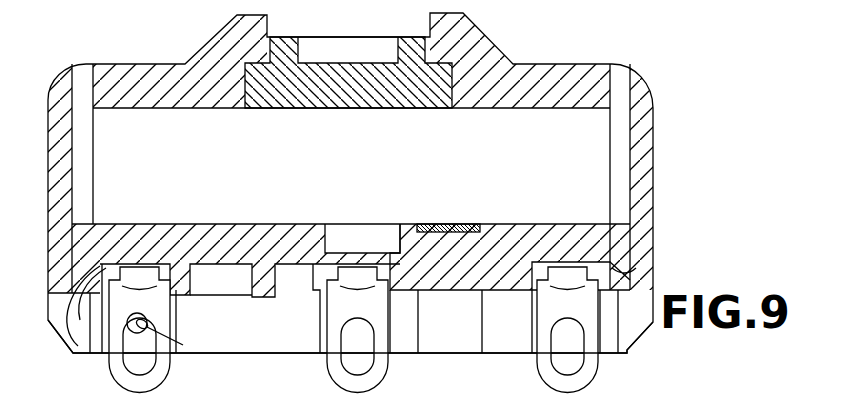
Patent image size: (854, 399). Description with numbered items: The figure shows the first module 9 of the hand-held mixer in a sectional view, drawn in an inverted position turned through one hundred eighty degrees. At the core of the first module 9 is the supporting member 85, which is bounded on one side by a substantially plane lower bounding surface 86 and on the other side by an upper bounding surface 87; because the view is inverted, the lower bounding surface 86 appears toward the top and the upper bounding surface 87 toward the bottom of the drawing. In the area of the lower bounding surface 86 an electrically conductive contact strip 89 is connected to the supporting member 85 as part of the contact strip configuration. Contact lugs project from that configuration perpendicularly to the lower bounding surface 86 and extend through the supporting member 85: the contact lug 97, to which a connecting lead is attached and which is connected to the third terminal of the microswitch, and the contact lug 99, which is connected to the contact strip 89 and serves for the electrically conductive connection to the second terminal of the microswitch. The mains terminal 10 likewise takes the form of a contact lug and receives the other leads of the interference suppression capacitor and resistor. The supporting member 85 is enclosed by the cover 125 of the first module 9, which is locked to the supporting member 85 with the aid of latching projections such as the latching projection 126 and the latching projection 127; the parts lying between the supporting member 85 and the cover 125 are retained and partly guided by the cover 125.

The first module 9 is at (695, 140).
The mains terminal 10 is at (162, 362).
The supporting member 85 is at (540, 243).
The lower bounding surface 86 is at (238, 224).
The upper bounding surface 87 is at (238, 267).
The contact strip 89 is at (450, 224).
The contact lug 97 is at (544, 362).
The contact lug 99 is at (386, 362).
The cover 125 is at (577, 72).
The latching projection 126 is at (640, 270).
The latching projection 127 is at (72, 342).